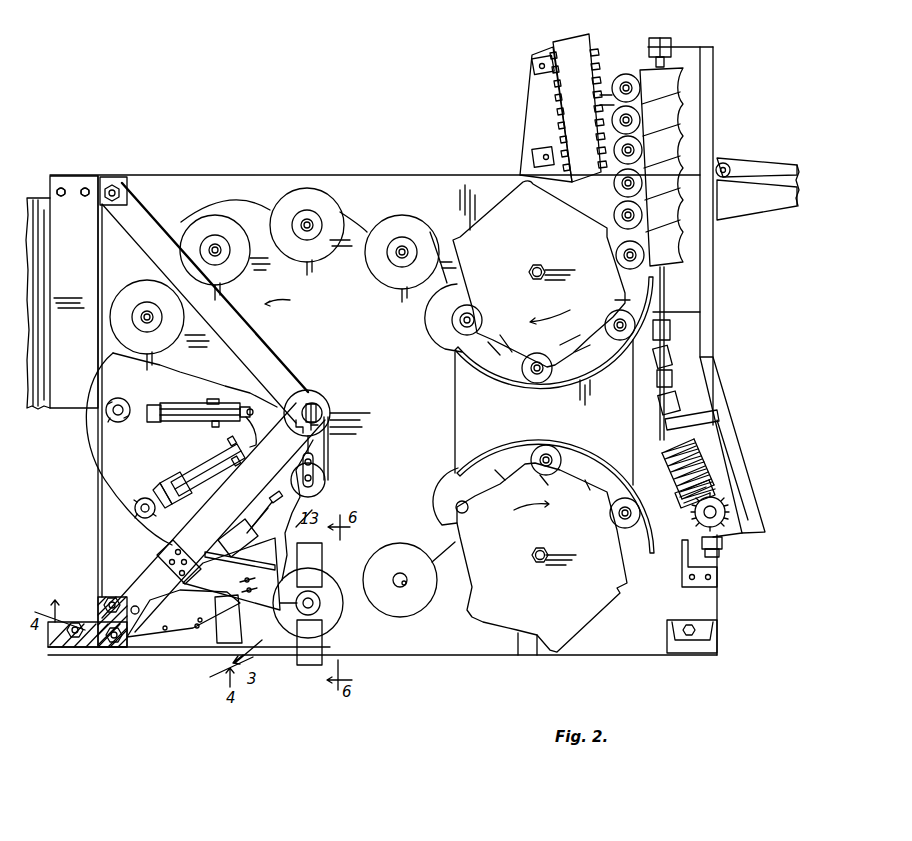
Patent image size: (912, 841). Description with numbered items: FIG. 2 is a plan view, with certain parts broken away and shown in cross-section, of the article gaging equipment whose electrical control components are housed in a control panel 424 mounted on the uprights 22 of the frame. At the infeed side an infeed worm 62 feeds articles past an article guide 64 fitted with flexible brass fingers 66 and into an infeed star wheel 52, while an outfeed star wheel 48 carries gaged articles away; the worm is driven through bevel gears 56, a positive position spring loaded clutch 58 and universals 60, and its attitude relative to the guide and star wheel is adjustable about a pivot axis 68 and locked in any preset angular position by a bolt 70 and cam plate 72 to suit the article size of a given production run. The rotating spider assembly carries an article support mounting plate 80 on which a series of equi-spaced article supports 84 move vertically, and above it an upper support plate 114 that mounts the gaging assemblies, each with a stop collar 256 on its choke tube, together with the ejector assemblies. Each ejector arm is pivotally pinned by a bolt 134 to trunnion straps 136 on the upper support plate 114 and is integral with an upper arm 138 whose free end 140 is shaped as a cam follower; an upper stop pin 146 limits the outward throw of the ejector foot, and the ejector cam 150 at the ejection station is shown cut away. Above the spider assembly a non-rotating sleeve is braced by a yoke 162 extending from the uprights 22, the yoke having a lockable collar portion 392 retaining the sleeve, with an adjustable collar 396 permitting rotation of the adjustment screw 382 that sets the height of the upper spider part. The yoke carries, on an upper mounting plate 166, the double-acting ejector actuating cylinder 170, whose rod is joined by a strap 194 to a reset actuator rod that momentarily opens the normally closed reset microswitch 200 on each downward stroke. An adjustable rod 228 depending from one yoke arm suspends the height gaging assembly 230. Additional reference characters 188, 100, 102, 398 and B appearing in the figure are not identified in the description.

The control panel 424 is at (38, 198).
The side plate 188 is at (80, 262).
The article guide 64 is at (578, 63).
The flexible brass fingers 66 is at (602, 83).
The infeed worm 62 is at (673, 105).
The bolt 70 is at (726, 163).
The cam plate 72 is at (767, 166).
The infeed star wheel 52 is at (555, 227).
The outfeed star wheel 48 is at (582, 608).
The universals 60 is at (678, 392).
The positive position spring loaded clutch 58 is at (706, 452).
The bevel gears 56 is at (722, 526).
The pivot axis 68 is at (690, 537).
The article support mounting plate 80 is at (405, 343).
The pulley B is at (305, 220).
The article supports 84 is at (413, 222).
The yoke 162 is at (257, 345).
The adjustment screw 382 is at (305, 407).
The hub 398 is at (318, 405).
The adjustable collar 396 is at (322, 413).
The lockable collar portion 392 is at (332, 426).
The reset microswitch 200 is at (317, 450).
The ejector actuating cylinder 170 is at (314, 470).
The upper mounting plate 166 is at (325, 480).
The strap 194 is at (300, 467).
The upper support plate 114 is at (155, 458).
The trunnion straps 136 is at (165, 403).
The upper arm 138 is at (196, 403).
The free end 140 is at (247, 405).
The ejector cam 150 is at (240, 428).
The upper stop pin 146 is at (220, 452).
The bolt 134 is at (174, 505).
The stop collar 256 is at (134, 500).
The uprights 22 is at (72, 647).
The adjustable rod 228 is at (135, 614).
The height gaging assembly 230 is at (180, 633).
The carriage plate 100 is at (237, 622).
The guide bar 102 is at (315, 565).